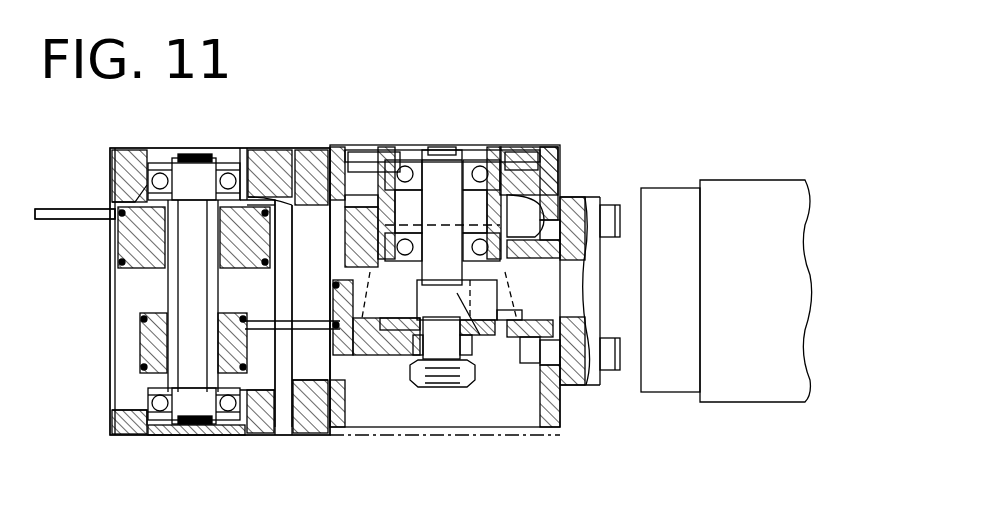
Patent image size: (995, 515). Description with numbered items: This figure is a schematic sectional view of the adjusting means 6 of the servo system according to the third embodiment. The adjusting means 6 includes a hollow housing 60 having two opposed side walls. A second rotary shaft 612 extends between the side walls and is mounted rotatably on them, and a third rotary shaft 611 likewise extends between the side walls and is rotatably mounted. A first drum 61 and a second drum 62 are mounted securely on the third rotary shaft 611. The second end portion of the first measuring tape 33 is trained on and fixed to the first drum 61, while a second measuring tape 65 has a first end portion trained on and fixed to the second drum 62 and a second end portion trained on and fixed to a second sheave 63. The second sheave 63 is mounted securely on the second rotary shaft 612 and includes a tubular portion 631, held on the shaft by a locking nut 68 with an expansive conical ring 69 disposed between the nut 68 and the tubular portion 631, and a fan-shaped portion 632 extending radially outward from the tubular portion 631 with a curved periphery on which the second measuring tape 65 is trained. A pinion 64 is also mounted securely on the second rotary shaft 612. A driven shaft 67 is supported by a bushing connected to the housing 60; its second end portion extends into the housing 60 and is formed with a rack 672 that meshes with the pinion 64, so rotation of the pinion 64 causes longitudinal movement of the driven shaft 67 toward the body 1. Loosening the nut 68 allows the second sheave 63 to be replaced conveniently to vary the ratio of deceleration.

The robot arm body 1 is at (745, 182).
The adjusting means 6 is at (327, 137).
The first measuring tape 33 is at (55, 208).
The hollow housing 60 is at (538, 140).
The first drum 61 is at (130, 232).
The second drum 62 is at (140, 343).
The second sheave 63 is at (368, 368).
The pinion 64 is at (410, 296).
The second measuring tape 65 is at (277, 437).
The driven shaft 67 is at (552, 278).
The locking nut 68 is at (460, 373).
The expansive conical ring 69 is at (483, 363).
The third rotary shaft 611 is at (212, 198).
The second rotary shaft 612 is at (441, 182).
The tubular portion 631 is at (456, 293).
The fan-shaped portion 632 is at (383, 358).
The rack 672 is at (507, 323).